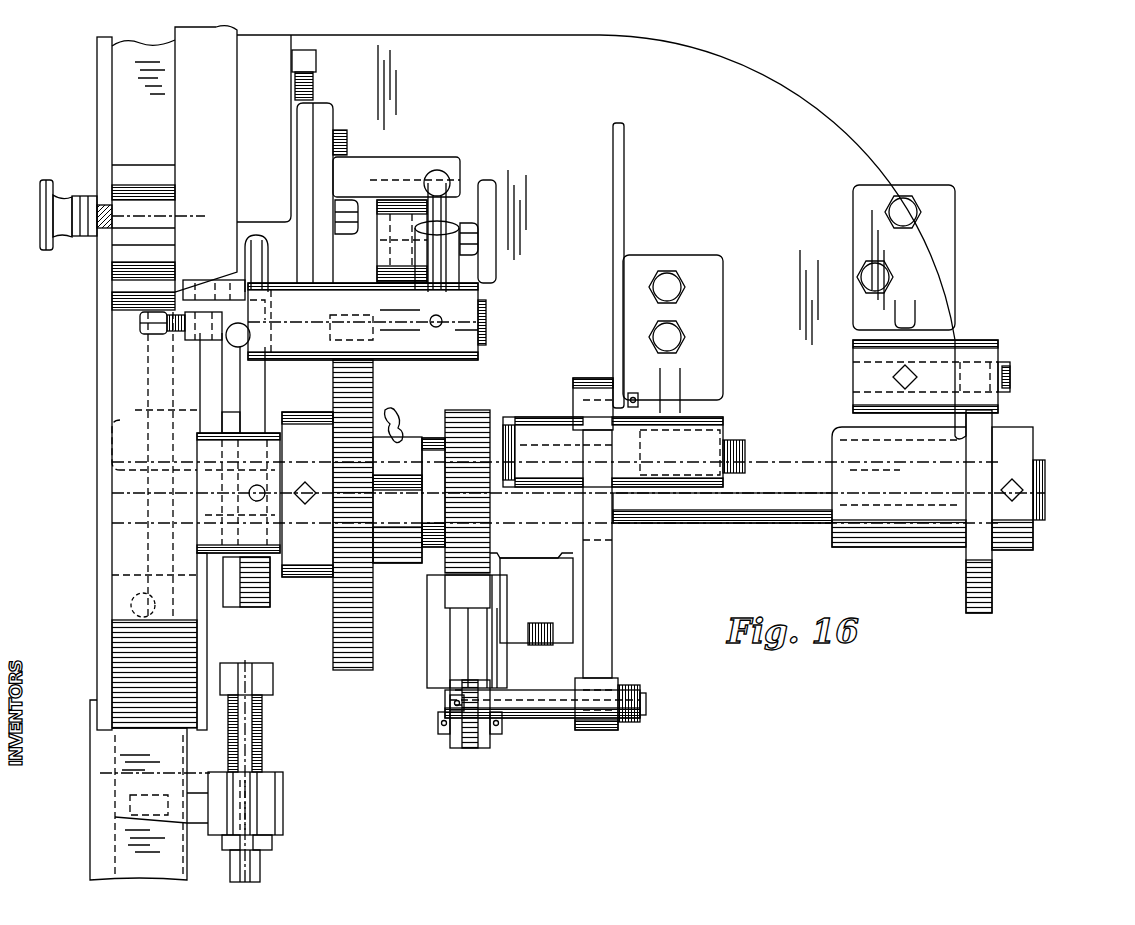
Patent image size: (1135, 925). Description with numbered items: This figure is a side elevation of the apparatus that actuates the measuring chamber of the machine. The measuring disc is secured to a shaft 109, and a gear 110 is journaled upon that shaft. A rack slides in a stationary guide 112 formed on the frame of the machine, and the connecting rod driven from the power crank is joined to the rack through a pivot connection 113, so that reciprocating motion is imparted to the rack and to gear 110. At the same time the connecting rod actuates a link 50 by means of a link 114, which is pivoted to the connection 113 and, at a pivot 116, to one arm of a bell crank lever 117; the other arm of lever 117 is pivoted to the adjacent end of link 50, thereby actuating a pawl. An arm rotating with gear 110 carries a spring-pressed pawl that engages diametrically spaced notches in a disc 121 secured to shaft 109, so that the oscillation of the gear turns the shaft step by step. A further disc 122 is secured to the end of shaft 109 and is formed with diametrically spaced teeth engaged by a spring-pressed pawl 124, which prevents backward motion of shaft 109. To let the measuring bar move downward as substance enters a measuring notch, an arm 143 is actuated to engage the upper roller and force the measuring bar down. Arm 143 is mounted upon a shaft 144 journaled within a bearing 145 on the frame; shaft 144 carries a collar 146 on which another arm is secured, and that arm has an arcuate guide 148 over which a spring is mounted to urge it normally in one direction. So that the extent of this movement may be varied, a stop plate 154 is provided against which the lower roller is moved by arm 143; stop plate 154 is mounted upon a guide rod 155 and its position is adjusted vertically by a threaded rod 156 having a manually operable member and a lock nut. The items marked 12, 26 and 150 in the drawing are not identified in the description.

The section line 12 is at (277, 745).
The support block 26 is at (115, 827).
The link 50 is at (621, 170).
The shaft 109 is at (742, 512).
The gear 110 is at (467, 420).
The stationary guide 112 is at (433, 618).
The pivot connection 113 is at (450, 673).
The link 114 is at (470, 748).
The pivot 116 is at (641, 708).
The bell crank lever 117 is at (600, 642).
The disc 121 is at (356, 672).
The disc 122 is at (978, 437).
The spring-pressed pawl 124 is at (975, 348).
The arm 143 is at (237, 340).
The shaft 144 is at (187, 333).
The bearing 145 is at (303, 347).
The collar 146 is at (465, 305).
The arcuate guide 148 is at (437, 217).
The bar 150 is at (443, 165).
The stop plate 154 is at (265, 680).
The guide rod 155 is at (263, 857).
The threaded rod 156 is at (262, 753).